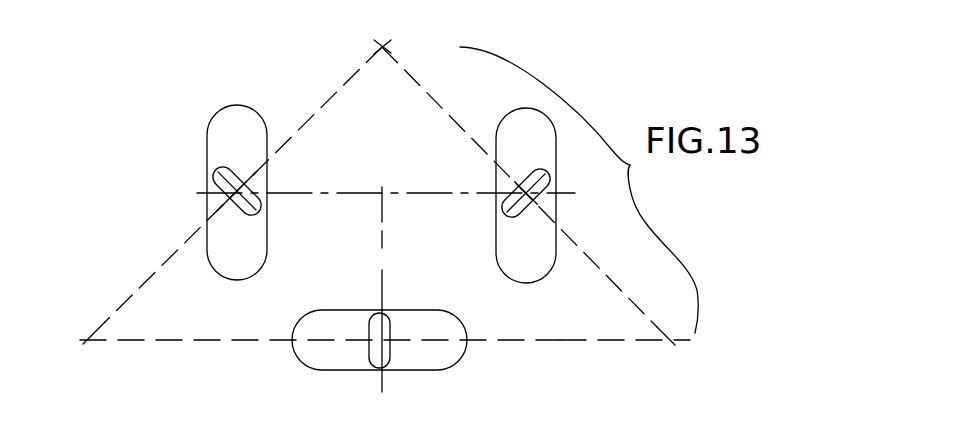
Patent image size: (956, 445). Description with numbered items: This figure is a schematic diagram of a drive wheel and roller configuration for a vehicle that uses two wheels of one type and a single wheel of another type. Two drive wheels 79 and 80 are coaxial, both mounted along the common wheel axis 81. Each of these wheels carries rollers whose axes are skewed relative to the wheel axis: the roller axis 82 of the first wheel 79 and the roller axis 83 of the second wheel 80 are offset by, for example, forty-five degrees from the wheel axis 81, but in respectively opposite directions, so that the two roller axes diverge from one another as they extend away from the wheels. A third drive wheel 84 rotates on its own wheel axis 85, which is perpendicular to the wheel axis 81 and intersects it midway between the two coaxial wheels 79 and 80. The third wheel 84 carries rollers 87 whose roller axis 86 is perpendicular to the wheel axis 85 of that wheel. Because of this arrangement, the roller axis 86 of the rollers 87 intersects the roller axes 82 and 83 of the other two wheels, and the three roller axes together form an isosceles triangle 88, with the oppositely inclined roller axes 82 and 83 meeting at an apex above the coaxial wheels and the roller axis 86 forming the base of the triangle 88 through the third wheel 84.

The drive wheel 79 is at (267, 127).
The drive wheel 80 is at (498, 128).
The wheel axis 81 is at (323, 191).
The roller axis 82 is at (337, 99).
The roller axis 83 is at (423, 92).
The third drive wheel 84 is at (423, 310).
The wheel axis 85 is at (383, 283).
The roller axis 86 is at (508, 340).
The rollers 87 is at (369, 360).
The isosceles triangle 88 is at (573, 343).